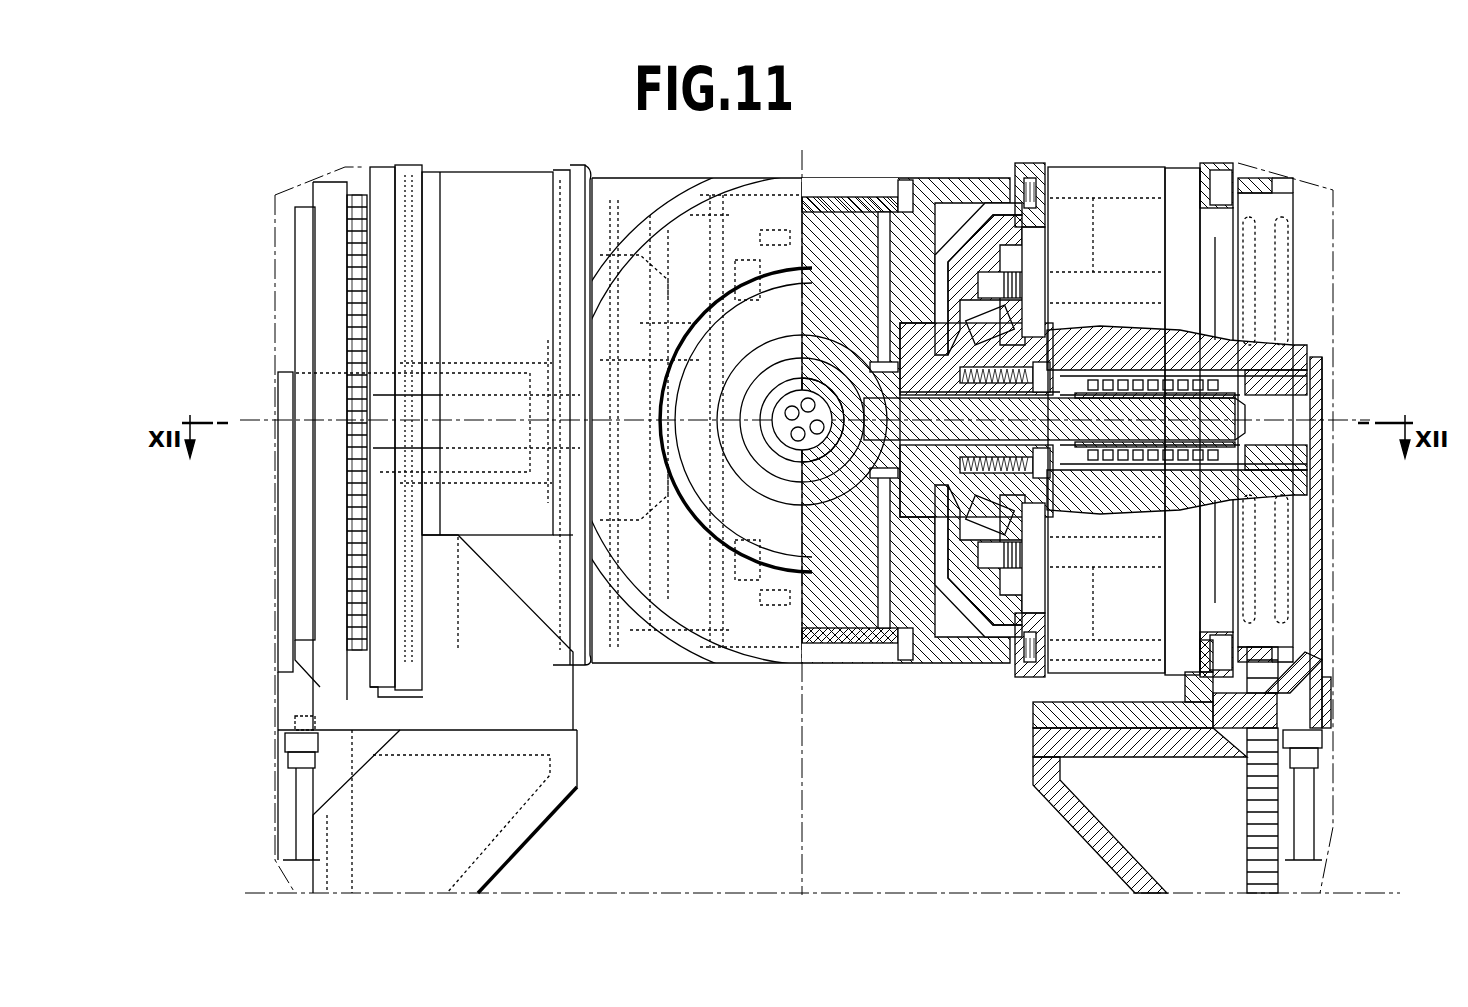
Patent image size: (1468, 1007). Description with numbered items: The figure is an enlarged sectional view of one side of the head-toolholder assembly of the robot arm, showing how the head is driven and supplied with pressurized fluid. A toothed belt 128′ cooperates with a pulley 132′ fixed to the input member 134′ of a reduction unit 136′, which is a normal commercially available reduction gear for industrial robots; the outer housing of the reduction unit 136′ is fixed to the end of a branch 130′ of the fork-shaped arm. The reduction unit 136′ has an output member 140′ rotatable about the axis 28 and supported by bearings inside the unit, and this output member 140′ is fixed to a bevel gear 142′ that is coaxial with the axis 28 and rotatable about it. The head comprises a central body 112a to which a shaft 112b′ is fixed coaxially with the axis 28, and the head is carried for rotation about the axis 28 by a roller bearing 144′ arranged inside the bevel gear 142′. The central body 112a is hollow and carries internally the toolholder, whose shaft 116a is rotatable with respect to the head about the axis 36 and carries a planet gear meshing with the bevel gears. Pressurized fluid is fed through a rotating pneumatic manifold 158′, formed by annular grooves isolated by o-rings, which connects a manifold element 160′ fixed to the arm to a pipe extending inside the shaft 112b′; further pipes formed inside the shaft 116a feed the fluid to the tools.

The axis 36 is at (805, 180).
The central body 112a is at (955, 178).
The bevel gear 142′ is at (1003, 178).
The reduction unit 136′ is at (1102, 167).
The toothed belt 128′ is at (1243, 178).
The pulley 132′ is at (1278, 178).
The output member 140′ is at (1035, 258).
The shaft 112b′ is at (1065, 345).
The input member 134′ is at (1305, 358).
The rotating pneumatic manifold 158′ is at (1305, 380).
The axis 28 is at (1345, 415).
The manifold element 160′ is at (1330, 500).
The shaft 116a is at (830, 470).
The roller bearing 144′ is at (1060, 515).
The branch 130′ is at (1090, 848).